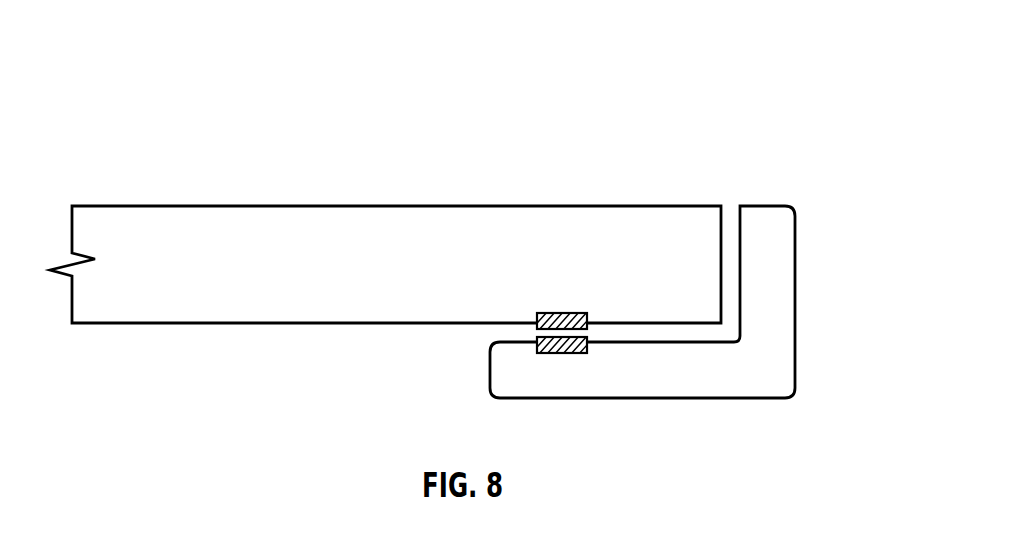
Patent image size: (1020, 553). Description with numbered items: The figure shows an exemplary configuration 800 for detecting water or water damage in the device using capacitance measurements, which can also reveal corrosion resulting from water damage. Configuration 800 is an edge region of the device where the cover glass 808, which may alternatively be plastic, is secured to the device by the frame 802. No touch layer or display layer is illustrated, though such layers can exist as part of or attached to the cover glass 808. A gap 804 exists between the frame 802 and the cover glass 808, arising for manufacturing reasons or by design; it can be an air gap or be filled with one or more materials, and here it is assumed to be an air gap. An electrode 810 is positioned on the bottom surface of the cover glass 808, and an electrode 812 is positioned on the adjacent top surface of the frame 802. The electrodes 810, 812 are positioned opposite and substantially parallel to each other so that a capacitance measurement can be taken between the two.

The configuration 800 is at (804, 46).
The frame 802 is at (777, 355).
The gap 804 is at (734, 204).
The cover glass 808 is at (222, 231).
The electrode 810 is at (564, 312).
The electrode 812 is at (560, 353).